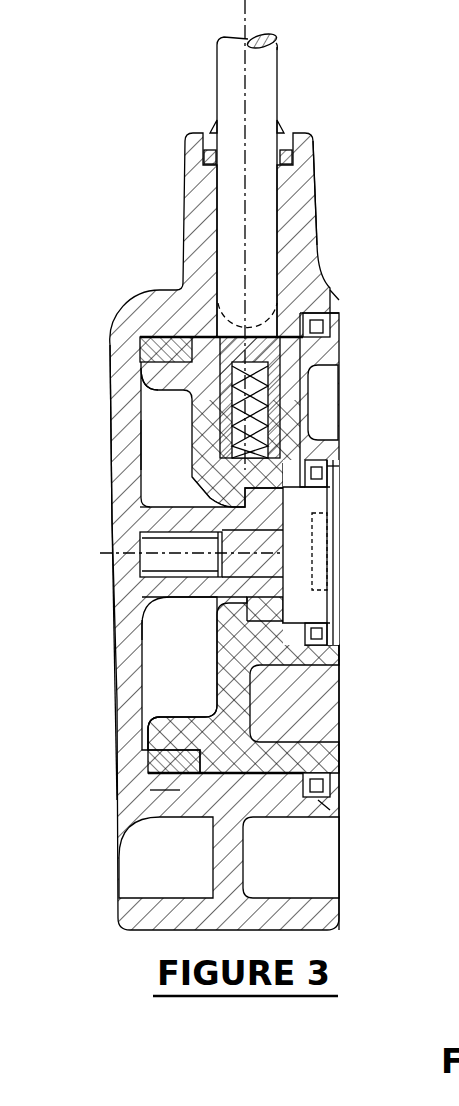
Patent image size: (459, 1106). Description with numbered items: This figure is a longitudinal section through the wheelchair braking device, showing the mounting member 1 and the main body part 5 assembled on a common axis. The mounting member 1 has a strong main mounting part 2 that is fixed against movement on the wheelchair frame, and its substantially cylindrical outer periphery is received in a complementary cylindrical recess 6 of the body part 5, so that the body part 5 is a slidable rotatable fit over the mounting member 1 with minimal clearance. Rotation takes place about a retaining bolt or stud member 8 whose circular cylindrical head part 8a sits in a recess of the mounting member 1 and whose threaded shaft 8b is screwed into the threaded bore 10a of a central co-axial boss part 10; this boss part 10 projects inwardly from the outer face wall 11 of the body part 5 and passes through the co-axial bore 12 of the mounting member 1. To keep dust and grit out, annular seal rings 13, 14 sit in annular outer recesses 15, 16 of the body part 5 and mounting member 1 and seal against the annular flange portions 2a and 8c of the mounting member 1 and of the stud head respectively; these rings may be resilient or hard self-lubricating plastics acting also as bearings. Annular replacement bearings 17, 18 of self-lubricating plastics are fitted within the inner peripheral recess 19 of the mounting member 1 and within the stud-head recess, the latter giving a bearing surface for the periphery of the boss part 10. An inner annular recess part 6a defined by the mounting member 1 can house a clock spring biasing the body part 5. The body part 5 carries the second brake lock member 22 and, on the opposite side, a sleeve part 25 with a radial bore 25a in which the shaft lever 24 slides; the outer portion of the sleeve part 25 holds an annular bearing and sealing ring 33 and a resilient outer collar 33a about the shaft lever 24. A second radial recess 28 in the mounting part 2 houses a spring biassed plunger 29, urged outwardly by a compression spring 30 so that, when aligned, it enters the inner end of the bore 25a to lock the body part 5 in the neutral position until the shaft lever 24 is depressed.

The mounting member 1 is at (367, 787).
The main mounting part 2 is at (263, 655).
The outer peripheral annular flange portion 2a is at (330, 325).
The main body part 5 is at (114, 692).
The cylindrical recess 6 is at (127, 445).
The inner annular recess part 6a is at (167, 467).
The retaining bolt or stud member 8 is at (338, 552).
The circular cylindrical head part 8a is at (305, 512).
The threaded shaft 8b is at (177, 563).
The outer peripheral annular flange portion 8c is at (336, 463).
The central co-axial boss part 10 is at (180, 523).
The co-axial threaded bore 10a is at (177, 590).
The outer face wall 11 is at (123, 422).
The co-axial bore 12 is at (243, 494).
The annular seal ring 13 is at (330, 779).
The annular seal ring 14 is at (318, 484).
The annular outer recess 15 is at (363, 540).
The annular outer recess 16 is at (349, 456).
The annular replacement bearing 17 is at (173, 766).
The annular replacement bearing 18 is at (324, 600).
The inner peripheral recess 19 is at (158, 750).
The second brake lock member 22 is at (162, 869).
The shaft lever 24 is at (260, 177).
The sleeve part 25 is at (182, 224).
The radial bore 25a is at (282, 209).
The second radial recess 28 is at (222, 398).
The spring biassed plunger 29 is at (309, 397).
The compression spring 30 is at (283, 405).
The annular bearing and sealing ring 33 is at (298, 147).
The resilient outer collar 33a is at (307, 102).